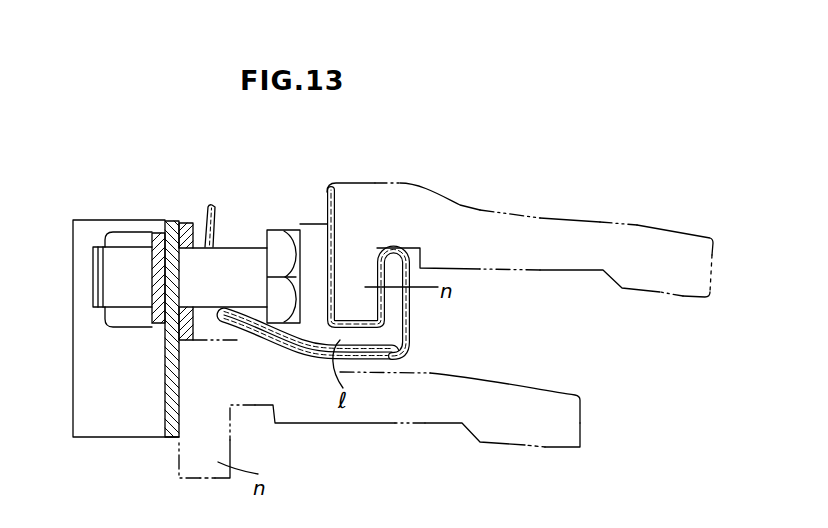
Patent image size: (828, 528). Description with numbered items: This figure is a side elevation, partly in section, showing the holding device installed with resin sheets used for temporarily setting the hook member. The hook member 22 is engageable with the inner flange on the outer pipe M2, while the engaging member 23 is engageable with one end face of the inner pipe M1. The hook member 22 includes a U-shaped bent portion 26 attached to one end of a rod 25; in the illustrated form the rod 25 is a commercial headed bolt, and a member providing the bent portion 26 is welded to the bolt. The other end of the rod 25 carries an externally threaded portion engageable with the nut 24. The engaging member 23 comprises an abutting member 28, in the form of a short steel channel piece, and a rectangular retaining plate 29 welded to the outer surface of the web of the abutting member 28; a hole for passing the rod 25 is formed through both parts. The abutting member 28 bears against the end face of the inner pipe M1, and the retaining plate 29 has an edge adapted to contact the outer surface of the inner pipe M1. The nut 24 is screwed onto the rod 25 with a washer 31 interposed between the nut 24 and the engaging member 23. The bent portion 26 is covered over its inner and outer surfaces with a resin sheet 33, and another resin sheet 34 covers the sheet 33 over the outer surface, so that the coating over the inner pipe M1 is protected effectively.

The hook member 22 is at (313, 242).
The engaging member 23 is at (98, 370).
The nut 24 is at (129, 270).
The rod 25 is at (237, 268).
The bent portion 26 is at (397, 310).
The abutting member 28 is at (163, 412).
The retaining plate 29 is at (184, 222).
The washer 31 is at (159, 242).
The resin sheet 33 is at (410, 323).
The resin sheet 34 is at (413, 342).
The inner pipe M1 is at (562, 433).
The outer pipe M2 is at (597, 237).